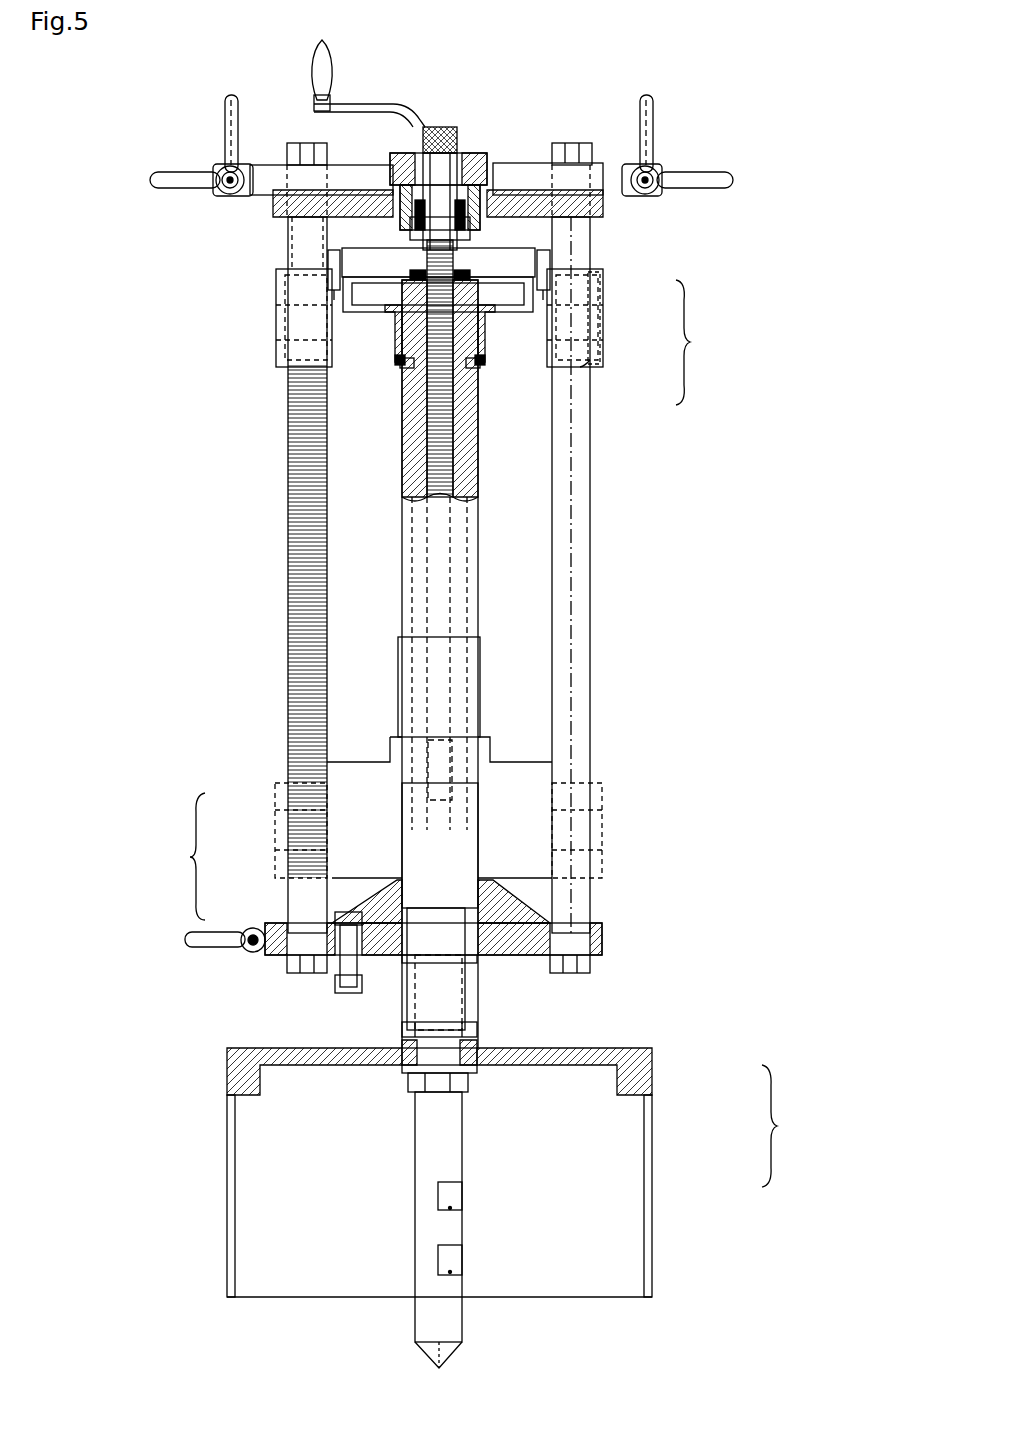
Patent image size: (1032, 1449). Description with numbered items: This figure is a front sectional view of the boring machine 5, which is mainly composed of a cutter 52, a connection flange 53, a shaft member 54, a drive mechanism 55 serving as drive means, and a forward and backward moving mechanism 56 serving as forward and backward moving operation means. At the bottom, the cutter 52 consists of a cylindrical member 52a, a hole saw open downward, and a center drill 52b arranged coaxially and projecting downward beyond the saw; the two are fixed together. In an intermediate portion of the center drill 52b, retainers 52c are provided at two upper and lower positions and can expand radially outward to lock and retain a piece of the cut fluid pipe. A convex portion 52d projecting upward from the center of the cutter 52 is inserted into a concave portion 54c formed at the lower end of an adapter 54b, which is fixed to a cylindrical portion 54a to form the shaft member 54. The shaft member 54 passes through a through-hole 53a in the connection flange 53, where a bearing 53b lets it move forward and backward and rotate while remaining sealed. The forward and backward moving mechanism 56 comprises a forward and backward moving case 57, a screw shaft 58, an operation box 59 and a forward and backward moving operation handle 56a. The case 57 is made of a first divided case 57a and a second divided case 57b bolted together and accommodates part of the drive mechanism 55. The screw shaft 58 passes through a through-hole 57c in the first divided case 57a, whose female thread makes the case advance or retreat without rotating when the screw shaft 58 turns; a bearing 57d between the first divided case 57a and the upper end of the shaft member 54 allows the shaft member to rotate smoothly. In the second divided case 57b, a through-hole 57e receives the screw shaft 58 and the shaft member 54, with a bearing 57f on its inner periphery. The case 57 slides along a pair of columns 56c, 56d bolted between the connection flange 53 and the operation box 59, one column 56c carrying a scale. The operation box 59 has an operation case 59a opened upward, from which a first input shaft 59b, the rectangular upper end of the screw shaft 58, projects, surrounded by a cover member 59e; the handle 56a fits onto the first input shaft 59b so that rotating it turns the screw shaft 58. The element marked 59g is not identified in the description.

The boring machine 5 is at (582, 78).
The cutter 52 is at (788, 1126).
The cylindrical member 52a is at (635, 1075).
The center drill 52b is at (448, 1285).
The retainer 52c is at (448, 1270).
The convex portion 52d is at (418, 1008).
The connection flange 53 is at (500, 905).
The through-hole 53a is at (470, 868).
The bearing 53b is at (485, 955).
The shaft member 54 is at (176, 856).
The cylindrical portion 54a is at (405, 818).
The adapter 54b is at (338, 914).
The concave portion 54c is at (470, 980).
The drive mechanism 55 is at (482, 692).
The forward and backward moving mechanism 56 is at (440, 112).
The forward and backward moving operation handle 56a is at (320, 46).
The column 56c is at (296, 504).
The column 56d is at (570, 545).
The forward and backward moving case 57 is at (603, 798).
The first divided case 57a is at (585, 282).
The second divided case 57b is at (592, 362).
The through-hole 57c is at (545, 260).
The bearing 57d is at (345, 262).
The through-hole 57e is at (400, 365).
The bearing 57f is at (385, 335).
The screw shaft 58 is at (460, 428).
The operation box 59 is at (472, 138).
The operation case 59a is at (475, 150).
The first input shaft 59b is at (470, 185).
The cover member 59e is at (420, 122).
The hex coupling 59g is at (423, 142).